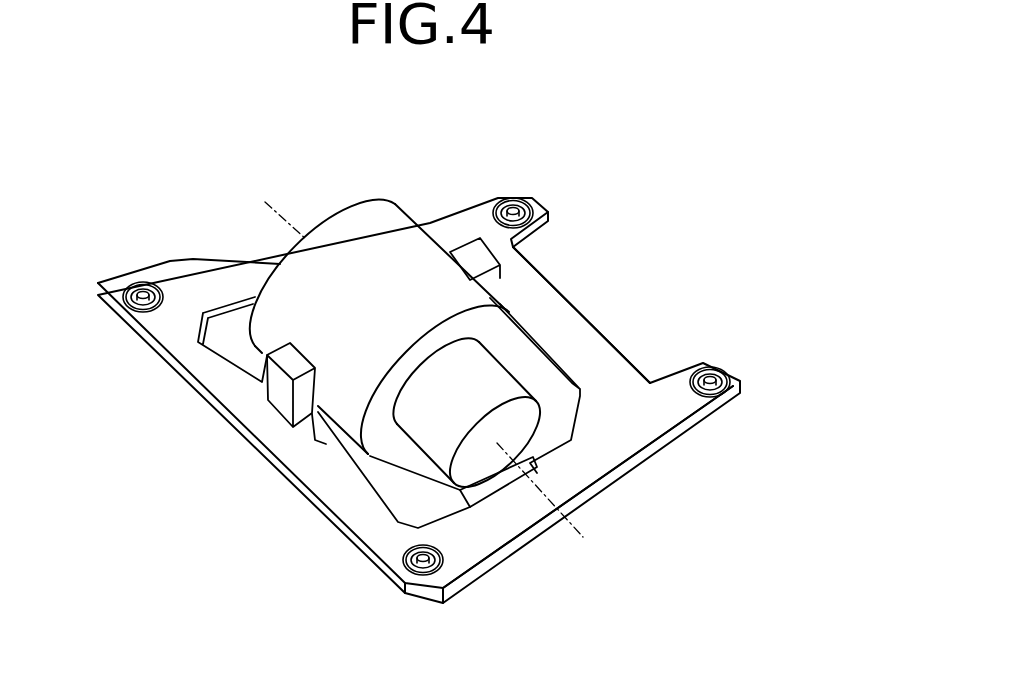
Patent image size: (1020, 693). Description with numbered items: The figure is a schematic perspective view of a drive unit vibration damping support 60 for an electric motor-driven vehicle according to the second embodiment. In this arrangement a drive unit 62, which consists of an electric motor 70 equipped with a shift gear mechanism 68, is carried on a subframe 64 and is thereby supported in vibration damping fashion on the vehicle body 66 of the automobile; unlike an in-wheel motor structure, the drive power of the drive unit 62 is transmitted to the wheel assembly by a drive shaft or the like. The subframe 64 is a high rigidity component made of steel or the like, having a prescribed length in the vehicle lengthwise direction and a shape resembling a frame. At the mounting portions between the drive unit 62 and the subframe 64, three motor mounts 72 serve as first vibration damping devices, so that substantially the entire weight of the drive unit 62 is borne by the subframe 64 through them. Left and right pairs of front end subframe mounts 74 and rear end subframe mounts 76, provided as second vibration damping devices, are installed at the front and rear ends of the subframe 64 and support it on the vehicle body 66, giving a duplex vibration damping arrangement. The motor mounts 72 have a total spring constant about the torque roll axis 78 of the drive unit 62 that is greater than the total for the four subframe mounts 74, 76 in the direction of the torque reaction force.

The drive unit vibration damping support 60 is at (227, 232).
The drive unit 62 is at (334, 438).
The subframe 64 is at (634, 430).
The vehicle body 66 is at (587, 272).
The shift gear mechanism 68 is at (490, 376).
The electric motor 70 is at (378, 218).
The motor mounts 72 is at (472, 262).
The front end subframe mounts 74 is at (125, 288).
The rear end subframe mounts 76 is at (530, 205).
The torque roll axis 78 is at (571, 521).